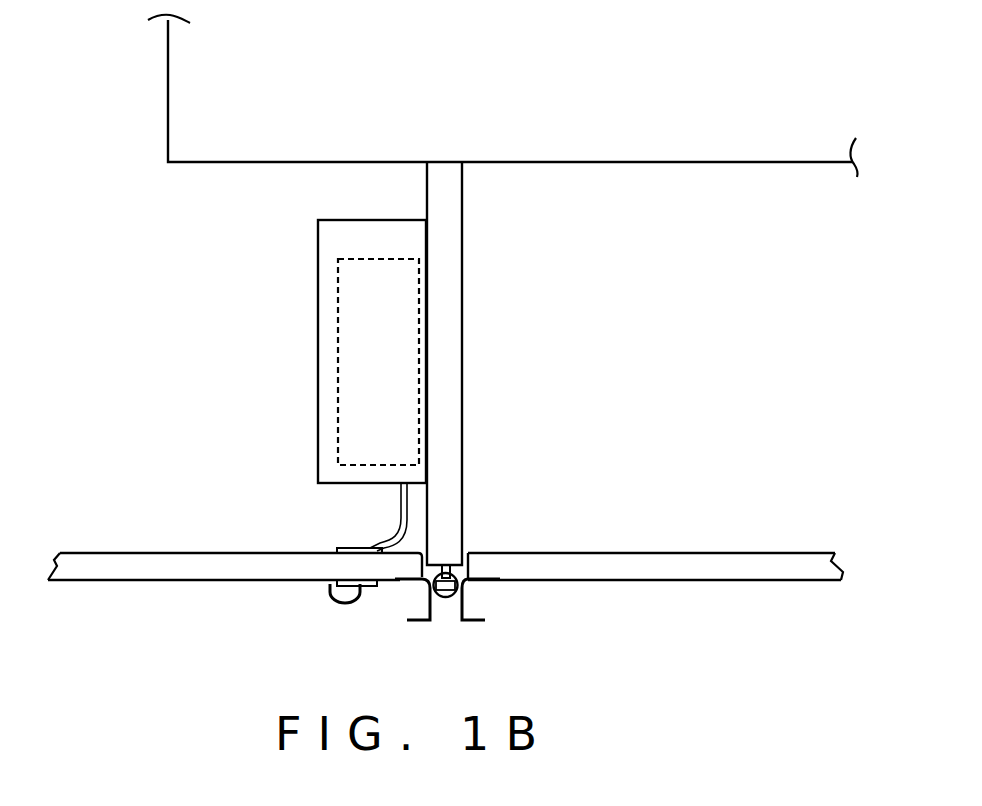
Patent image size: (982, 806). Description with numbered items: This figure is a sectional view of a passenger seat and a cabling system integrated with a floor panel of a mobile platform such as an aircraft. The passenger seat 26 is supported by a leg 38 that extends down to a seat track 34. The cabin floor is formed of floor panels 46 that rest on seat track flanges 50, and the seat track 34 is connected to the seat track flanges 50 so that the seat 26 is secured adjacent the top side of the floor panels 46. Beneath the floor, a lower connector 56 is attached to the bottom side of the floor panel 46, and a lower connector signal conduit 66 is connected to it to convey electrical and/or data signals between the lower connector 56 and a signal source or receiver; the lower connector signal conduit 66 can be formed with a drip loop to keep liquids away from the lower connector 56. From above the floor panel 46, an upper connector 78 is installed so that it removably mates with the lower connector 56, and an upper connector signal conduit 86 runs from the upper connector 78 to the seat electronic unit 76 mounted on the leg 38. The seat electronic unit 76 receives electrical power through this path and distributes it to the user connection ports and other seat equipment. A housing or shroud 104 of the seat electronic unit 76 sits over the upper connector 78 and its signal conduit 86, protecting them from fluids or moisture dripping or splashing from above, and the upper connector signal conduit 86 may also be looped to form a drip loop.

The passenger seat 26 is at (441, 119).
The leg 38 is at (445, 422).
The housing or shroud 104 is at (318, 262).
The seat electronic unit 76 is at (338, 361).
The upper connector signal conduit 86 is at (392, 517).
The upper connector 78 is at (358, 548).
The floor panel 46 is at (186, 568).
The seat track flange 50 is at (415, 622).
The seat track 34 is at (445, 598).
The lower connector 56 is at (370, 588).
The lower connector signal conduit 66 is at (328, 585).